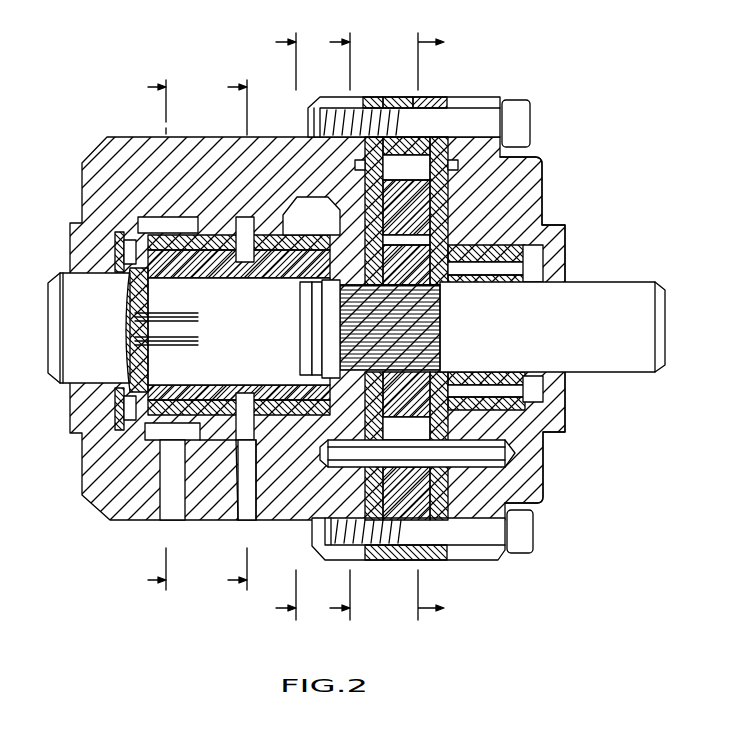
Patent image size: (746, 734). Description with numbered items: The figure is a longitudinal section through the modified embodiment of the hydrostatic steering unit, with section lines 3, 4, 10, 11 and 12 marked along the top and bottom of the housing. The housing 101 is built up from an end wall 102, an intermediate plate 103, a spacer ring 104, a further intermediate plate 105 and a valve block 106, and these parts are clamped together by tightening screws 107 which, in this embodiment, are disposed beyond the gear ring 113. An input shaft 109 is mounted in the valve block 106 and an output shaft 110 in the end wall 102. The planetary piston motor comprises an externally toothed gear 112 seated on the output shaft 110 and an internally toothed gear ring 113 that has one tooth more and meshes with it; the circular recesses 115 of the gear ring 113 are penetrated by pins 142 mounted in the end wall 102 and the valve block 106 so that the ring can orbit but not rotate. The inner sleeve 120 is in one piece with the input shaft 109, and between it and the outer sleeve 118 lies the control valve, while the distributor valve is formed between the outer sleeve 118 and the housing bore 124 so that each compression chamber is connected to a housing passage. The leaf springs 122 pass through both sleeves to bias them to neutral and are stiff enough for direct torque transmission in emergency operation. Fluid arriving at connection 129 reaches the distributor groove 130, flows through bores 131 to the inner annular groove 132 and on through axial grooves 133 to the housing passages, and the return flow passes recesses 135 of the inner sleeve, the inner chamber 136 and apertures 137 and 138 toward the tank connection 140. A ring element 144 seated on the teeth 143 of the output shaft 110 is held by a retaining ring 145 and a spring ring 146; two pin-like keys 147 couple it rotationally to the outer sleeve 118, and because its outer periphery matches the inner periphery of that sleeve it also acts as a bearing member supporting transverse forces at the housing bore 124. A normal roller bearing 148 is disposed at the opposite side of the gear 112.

The housing 101 is at (225, 133).
The end wall 102 is at (530, 168).
The intermediate plate 103 is at (370, 98).
The spacer ring 104 is at (418, 100).
The further intermediate plate 105 is at (445, 100).
The valve block 106 is at (108, 165).
The tightening screws 107 is at (497, 112).
The input shaft 109 is at (68, 298).
The output shaft 110 is at (623, 292).
The externally toothed gear 112 is at (430, 245).
The internally toothed gear ring 113 is at (422, 193).
The circular recesses 115 is at (412, 470).
The outer sleeve 118 is at (212, 233).
The inner sleeve 120 is at (115, 253).
The leaf springs 122 is at (130, 323).
The housing bore 124 is at (215, 410).
The connection 129 is at (247, 430).
The distributor groove 130 is at (230, 425).
The bores 131 is at (252, 440).
The inner annular groove 132 is at (280, 425).
The axial grooves 133 is at (268, 255).
The recesses 135 is at (300, 392).
The inner chamber 136 is at (212, 337).
The aperture 137 is at (165, 414).
The aperture 138 is at (148, 433).
The tank connection 140 is at (168, 505).
The pins 142 is at (490, 453).
The teeth 143 is at (422, 347).
The ring element 144 is at (362, 285).
The retaining ring 145 is at (338, 262).
The spring ring 146 is at (318, 285).
The pin-like keys 147 is at (360, 408).
The roller bearing 148 is at (523, 402).
The output shaft 10 is at (152, 333).
The motor 11 is at (234, 333).
The intermediate plate 3 is at (286, 327).
The spacer ring 4 is at (338, 327).
The externally toothed gear 12 is at (432, 327).